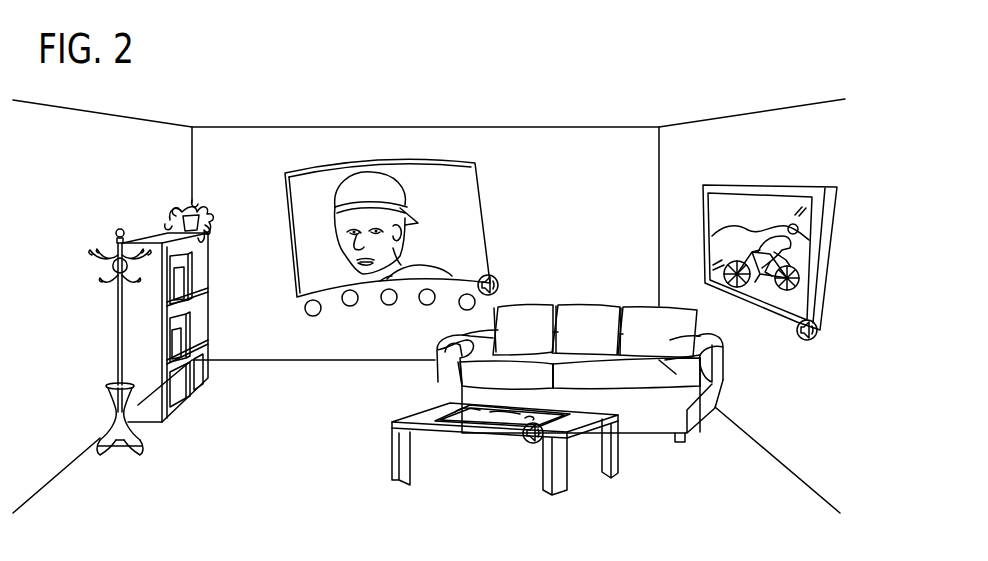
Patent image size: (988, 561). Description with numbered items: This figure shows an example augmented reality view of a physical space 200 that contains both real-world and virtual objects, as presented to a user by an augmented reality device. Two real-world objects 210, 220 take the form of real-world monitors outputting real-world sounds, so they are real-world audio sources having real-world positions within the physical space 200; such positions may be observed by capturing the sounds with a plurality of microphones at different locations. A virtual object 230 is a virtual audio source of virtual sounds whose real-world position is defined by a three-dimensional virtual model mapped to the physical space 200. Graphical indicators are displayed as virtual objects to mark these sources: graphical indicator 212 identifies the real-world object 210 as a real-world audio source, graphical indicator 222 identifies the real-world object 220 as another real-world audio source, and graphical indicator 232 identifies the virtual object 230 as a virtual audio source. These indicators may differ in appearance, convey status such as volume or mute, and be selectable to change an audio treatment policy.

The physical space 200 is at (208, 92).
The real-world object 210 is at (732, 188).
The graphical indicator 212 is at (802, 340).
The real-world object 220 is at (452, 416).
The graphical indicator 222 is at (530, 444).
The virtual object 230 is at (442, 162).
The graphical indicator 232 is at (498, 296).